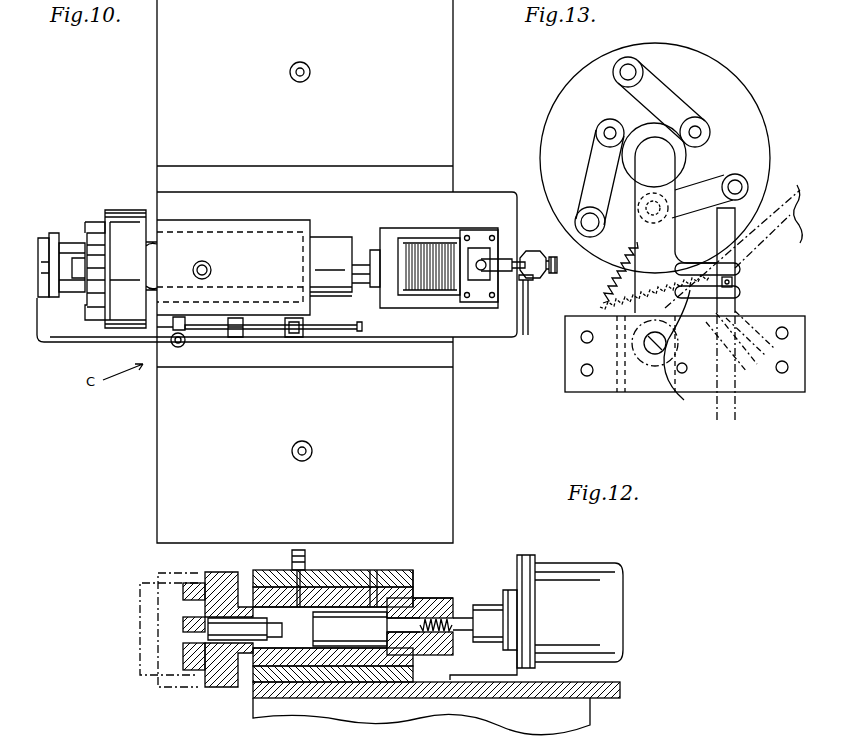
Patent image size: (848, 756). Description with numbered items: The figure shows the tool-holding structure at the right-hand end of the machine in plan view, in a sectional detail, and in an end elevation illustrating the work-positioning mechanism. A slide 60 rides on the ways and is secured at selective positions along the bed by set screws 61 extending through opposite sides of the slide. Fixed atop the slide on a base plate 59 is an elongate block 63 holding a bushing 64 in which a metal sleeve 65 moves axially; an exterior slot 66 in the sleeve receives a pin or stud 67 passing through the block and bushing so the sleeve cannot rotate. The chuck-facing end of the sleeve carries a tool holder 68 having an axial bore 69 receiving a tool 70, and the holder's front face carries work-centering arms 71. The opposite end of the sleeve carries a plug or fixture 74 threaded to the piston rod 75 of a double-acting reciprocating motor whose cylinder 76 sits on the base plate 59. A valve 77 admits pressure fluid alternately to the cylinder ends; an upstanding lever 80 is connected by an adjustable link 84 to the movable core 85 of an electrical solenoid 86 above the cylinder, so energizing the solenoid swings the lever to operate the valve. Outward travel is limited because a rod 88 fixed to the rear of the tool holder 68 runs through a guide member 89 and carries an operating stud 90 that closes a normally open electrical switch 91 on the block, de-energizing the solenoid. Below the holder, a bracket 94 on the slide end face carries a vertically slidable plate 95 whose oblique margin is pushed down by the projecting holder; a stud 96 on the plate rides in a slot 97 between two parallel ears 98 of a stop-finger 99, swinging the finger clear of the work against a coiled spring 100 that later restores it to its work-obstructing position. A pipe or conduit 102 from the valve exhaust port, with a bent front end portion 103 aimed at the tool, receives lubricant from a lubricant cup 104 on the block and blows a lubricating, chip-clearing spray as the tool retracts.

In FIG. 10, the base plate 59 is at (467, 203).
In FIG. 12, the base plate 59 is at (607, 700).
In FIG. 10, the slide 60 is at (157, 415).
In FIG. 12, the slide 60 is at (260, 717).
In FIG. 10, the set screws 61 is at (311, 72).
In FIG. 10, the elongate block 63 is at (233, 222).
In FIG. 12, the elongate block 63 is at (347, 575).
In FIG. 12, the bushing 64 is at (277, 590).
In FIG. 12, the metal sleeve 65 is at (367, 650).
In FIG. 12, the slot 66 is at (415, 598).
In FIG. 10, the pin or stud 67 is at (282, 267).
In FIG. 12, the pin or stud 67 is at (373, 572).
In FIG. 10, the tool holder 68 is at (128, 213).
In FIG. 13, the tool holder 68 is at (733, 82).
In FIG. 12, the tool holder 68 is at (222, 682).
In FIG. 12, the axial bore 69 is at (282, 637).
In FIG. 12, the tool 70 is at (248, 640).
In FIG. 10, the work-centering arms 71 is at (95, 222).
In FIG. 13, the work-centering arms 71 is at (663, 82).
In FIG. 12, the work-centering arms 71 is at (183, 600).
In FIG. 10, the plug or fixture 74 is at (338, 237).
In FIG. 12, the plug or fixture 74 is at (437, 603).
In FIG. 10, the piston rod 75 is at (360, 258).
In FIG. 12, the piston rod 75 is at (493, 603).
In FIG. 10, the cylinder 76 is at (387, 310).
In FIG. 12, the cylinder 76 is at (598, 572).
In FIG. 10, the valve 77 is at (533, 281).
In FIG. 10, the upstanding lever 80 is at (557, 267).
In FIG. 10, the adjustable link 84 is at (513, 258).
In FIG. 10, the movable core 85 is at (482, 247).
In FIG. 10, the electrical solenoid 86 is at (413, 252).
In FIG. 10, the rod 88 is at (205, 340).
In FIG. 10, the guide member 89 is at (236, 337).
In FIG. 10, the operating stud 90 is at (348, 330).
In FIG. 10, the electrical switch 91 is at (293, 337).
In FIG. 10, the bracket 94 is at (60, 297).
In FIG. 13, the bracket 94 is at (600, 383).
In FIG. 13, the plate 95 is at (752, 185).
In FIG. 13, the stud 96 is at (733, 282).
In FIG. 13, the slot 97 is at (684, 351).
In FIG. 13, the ears 98 is at (742, 265).
In FIG. 10, the stop-finger 99 is at (44, 256).
In FIG. 13, the stop-finger 99 is at (640, 210).
In FIG. 13, the coiled spring 100 is at (612, 281).
In FIG. 10, the pipe or conduit 102 is at (470, 338).
In FIG. 10, the bent front end portion 103 is at (38, 300).
In FIG. 10, the lubricant cup 104 is at (178, 348).